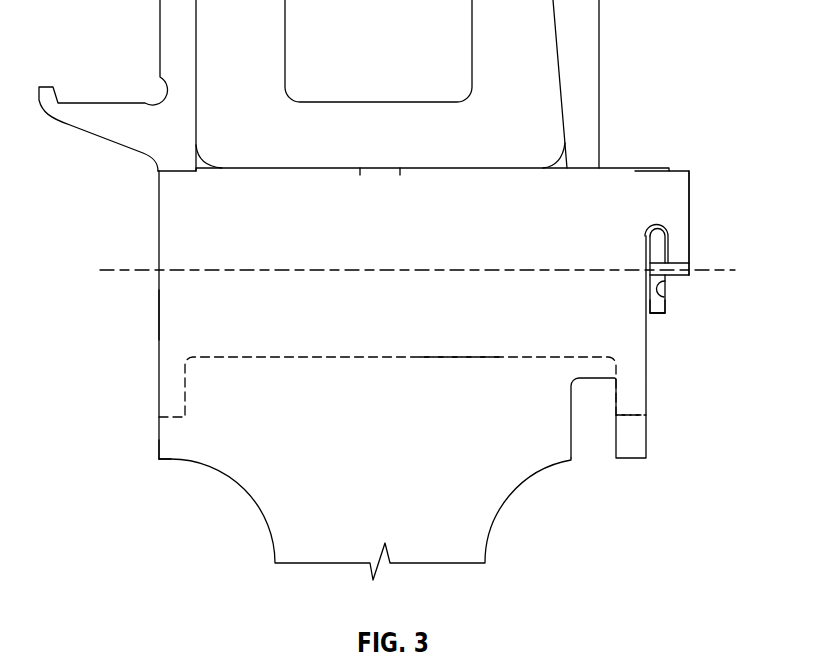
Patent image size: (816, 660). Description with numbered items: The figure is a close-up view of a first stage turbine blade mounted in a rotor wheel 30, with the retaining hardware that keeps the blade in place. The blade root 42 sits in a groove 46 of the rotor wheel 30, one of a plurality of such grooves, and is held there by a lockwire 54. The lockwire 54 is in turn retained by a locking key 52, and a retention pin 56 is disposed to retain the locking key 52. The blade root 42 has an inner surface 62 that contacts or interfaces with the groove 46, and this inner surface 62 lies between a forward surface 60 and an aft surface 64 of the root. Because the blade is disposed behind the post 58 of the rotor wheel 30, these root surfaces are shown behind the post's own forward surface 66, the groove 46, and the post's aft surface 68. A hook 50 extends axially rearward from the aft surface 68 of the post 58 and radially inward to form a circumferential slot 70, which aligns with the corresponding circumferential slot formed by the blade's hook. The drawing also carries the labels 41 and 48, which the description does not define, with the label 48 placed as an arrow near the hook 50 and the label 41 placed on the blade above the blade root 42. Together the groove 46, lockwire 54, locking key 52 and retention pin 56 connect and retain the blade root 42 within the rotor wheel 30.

The rotor wheel 30 is at (394, 516).
The upper portion 41 is at (526, 121).
The blade root 42 is at (466, 224).
The groove 46 is at (279, 357).
The engagement direction 48 is at (672, 310).
The hook 50 is at (680, 200).
The locking key 52 is at (657, 314).
The lockwire 54 is at (656, 226).
The retention pin 56 is at (673, 262).
The post 58 is at (193, 325).
The forward surface 60 is at (157, 213).
The inner surface 62 is at (454, 358).
The aft surface 64 is at (647, 398).
The forward surface 66 is at (158, 446).
The aft surface 68 is at (647, 442).
The circumferential slot 70 is at (664, 297).